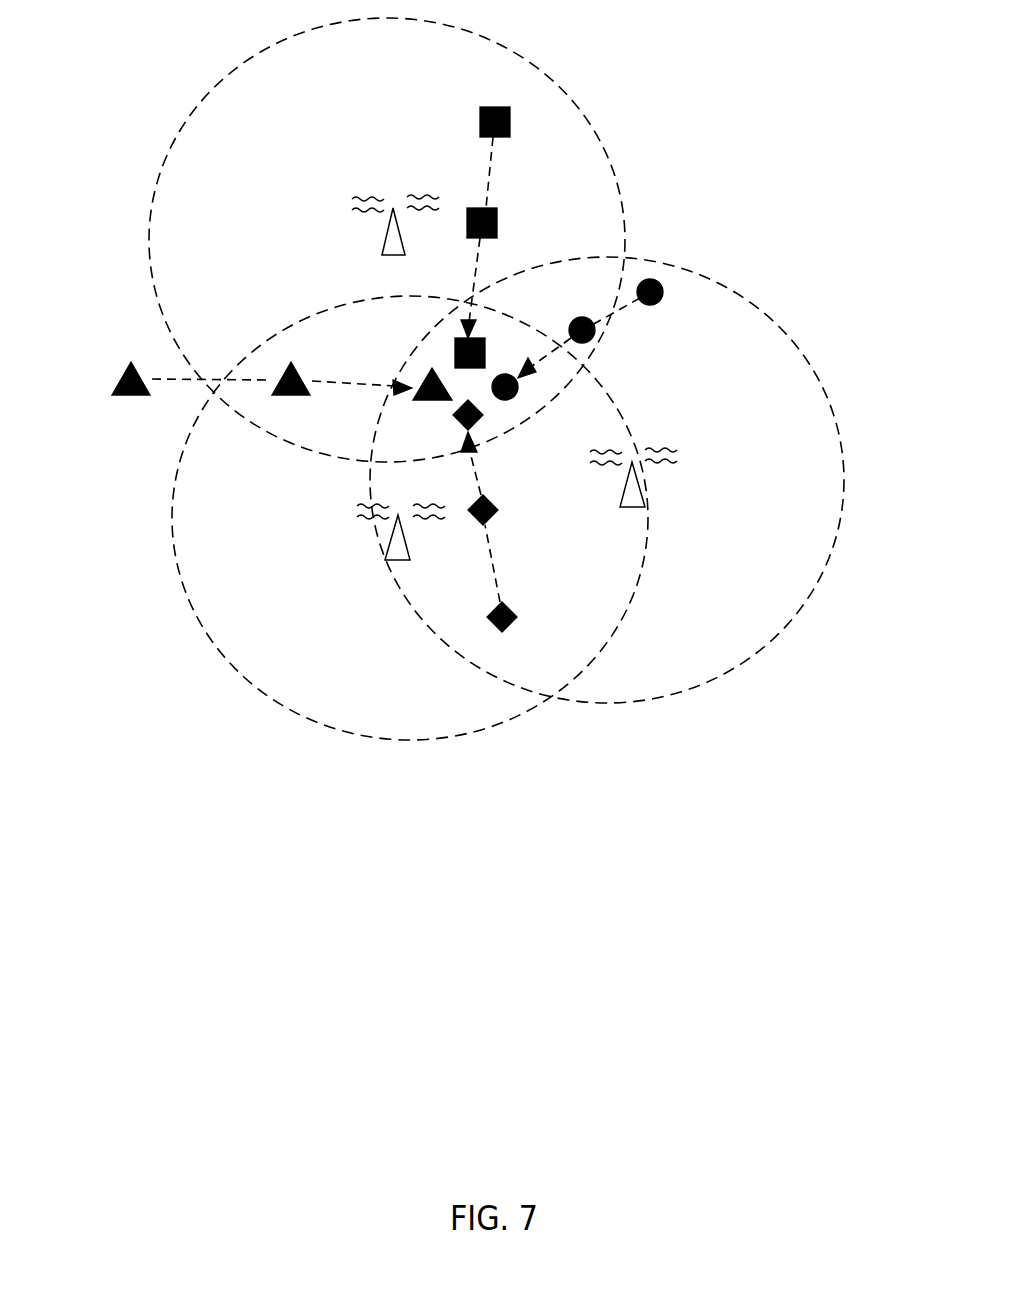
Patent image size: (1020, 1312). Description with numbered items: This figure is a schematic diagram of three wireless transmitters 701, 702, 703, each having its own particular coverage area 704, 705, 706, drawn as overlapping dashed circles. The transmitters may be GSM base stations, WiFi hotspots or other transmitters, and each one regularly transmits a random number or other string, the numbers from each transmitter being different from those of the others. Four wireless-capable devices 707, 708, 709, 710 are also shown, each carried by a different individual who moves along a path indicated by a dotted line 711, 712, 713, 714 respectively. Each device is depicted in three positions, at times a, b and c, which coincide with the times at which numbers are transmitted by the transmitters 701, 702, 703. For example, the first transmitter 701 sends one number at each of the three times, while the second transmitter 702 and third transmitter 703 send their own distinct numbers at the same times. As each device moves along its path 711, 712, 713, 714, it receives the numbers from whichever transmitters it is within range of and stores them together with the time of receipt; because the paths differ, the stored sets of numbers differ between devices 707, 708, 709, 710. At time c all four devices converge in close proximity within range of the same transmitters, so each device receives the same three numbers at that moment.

The first wireless transmitter 701 is at (386, 230).
The second wireless transmitter 702 is at (380, 540).
The third wireless transmitter 703 is at (647, 488).
The coverage area of first transmitter 704 is at (215, 90).
The coverage area of second transmitter 705 is at (207, 638).
The coverage area of third transmitter 706 is at (780, 635).
The first wireless-capable device 707 is at (497, 101).
The second wireless-capable device 708 is at (662, 273).
The third wireless-capable device 709 is at (510, 625).
The fourth wireless-capable device 710 is at (124, 403).
The path of first device 711 is at (488, 178).
The path of second device 712 is at (618, 314).
The path of third device 713 is at (495, 570).
The path of fourth device 714 is at (198, 386).